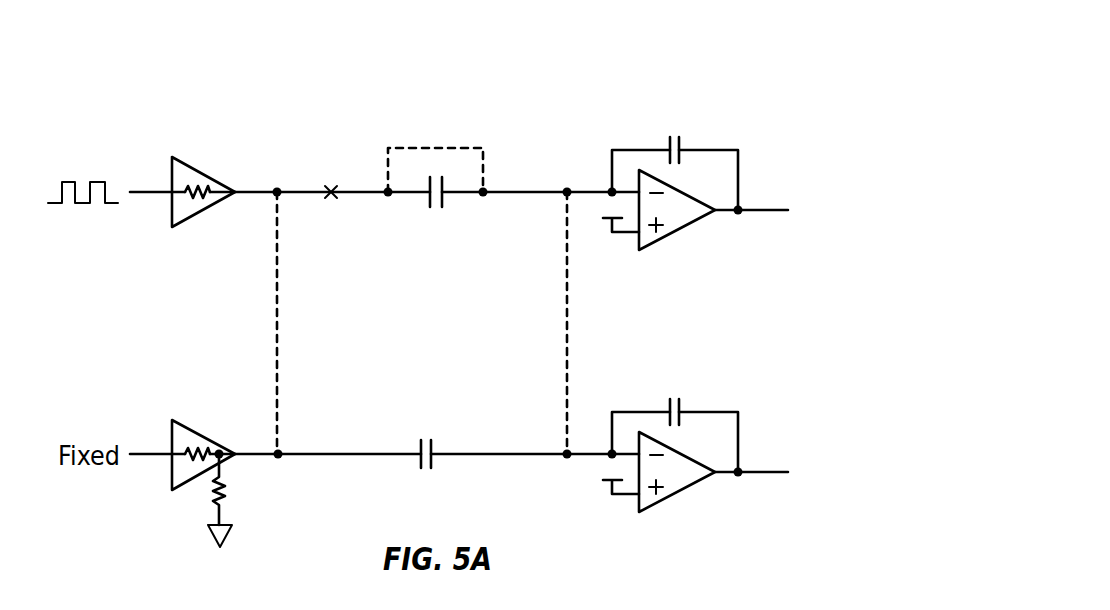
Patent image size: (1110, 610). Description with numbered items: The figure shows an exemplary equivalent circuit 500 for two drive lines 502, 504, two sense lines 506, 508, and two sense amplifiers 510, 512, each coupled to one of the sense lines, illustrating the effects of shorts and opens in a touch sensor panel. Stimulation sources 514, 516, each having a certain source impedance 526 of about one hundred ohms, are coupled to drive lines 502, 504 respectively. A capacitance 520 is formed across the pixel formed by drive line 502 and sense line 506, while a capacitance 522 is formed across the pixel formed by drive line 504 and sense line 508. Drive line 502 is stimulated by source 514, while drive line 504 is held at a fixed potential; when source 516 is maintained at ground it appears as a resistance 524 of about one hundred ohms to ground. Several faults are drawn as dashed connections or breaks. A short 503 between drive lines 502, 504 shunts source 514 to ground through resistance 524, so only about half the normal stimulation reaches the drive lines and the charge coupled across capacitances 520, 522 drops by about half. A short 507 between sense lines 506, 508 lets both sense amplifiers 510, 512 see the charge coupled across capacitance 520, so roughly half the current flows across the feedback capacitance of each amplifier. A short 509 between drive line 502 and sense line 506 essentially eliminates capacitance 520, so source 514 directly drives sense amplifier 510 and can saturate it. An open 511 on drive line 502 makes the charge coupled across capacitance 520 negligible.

The equivalent circuit 500 is at (256, 60).
The drive line 502 is at (307, 190).
The short 503 is at (277, 342).
The drive line 504 is at (385, 453).
The sense line 506 is at (520, 190).
The short 507 is at (567, 343).
The sense line 508 is at (462, 453).
The short 509 is at (463, 122).
The sense amplifier 510 is at (675, 232).
The open 511 is at (332, 200).
The sense amplifier 512 is at (675, 494).
The stimulation source 514 is at (210, 167).
The stimulation source 516 is at (210, 433).
The capacitance 520 is at (444, 203).
The capacitance 522 is at (433, 462).
The resistance 524 is at (225, 492).
The source impedance 526 is at (197, 206).